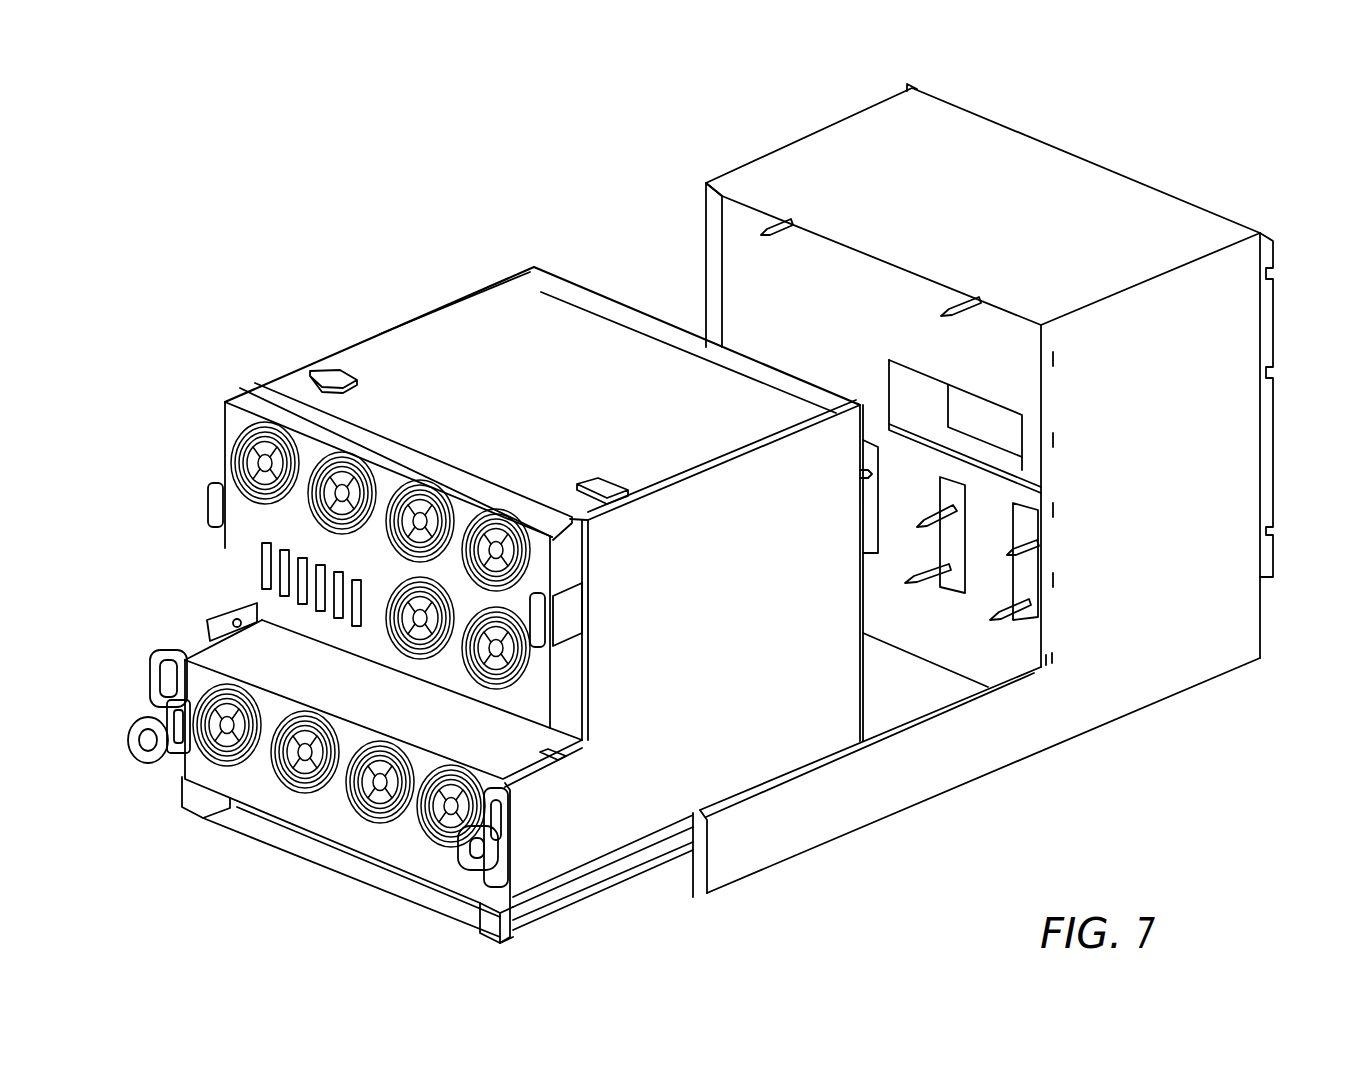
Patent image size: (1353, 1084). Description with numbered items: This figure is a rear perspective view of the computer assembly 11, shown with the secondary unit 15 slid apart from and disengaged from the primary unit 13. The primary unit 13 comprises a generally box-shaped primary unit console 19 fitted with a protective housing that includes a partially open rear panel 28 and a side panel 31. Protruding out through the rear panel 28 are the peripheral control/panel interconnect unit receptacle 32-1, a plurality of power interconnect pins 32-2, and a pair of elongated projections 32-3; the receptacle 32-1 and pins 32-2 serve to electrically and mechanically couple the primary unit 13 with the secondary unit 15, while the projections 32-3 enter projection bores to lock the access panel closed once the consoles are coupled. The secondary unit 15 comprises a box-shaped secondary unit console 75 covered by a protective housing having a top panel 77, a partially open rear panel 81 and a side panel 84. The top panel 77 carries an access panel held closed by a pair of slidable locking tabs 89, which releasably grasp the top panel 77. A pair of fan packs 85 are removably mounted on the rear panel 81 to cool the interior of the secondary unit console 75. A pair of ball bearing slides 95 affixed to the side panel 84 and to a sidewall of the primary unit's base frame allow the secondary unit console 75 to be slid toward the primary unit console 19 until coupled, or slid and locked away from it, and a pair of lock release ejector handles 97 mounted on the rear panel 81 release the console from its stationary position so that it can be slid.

The computer assembly 11 is at (1251, 771).
The primary unit 13 is at (1103, 675).
The secondary unit 15 is at (439, 258).
The primary unit console 19 is at (1105, 160).
The partially open rear panel 28 is at (743, 252).
The side panel 31 is at (1205, 655).
The peripheral control/panel interconnect unit receptacle 32-1 is at (1005, 428).
The power interconnect pins 32-2 is at (1020, 597).
The elongated projections 32-3 is at (948, 306).
The secondary unit console 75 is at (396, 323).
The top panel 77 is at (553, 290).
The partially open rear panel 81 is at (305, 592).
The side panel 84 is at (690, 762).
The fan packs 85 is at (228, 423).
The slidable locking tabs 89 is at (360, 378).
The ball bearing slides 95 is at (602, 902).
The lock release ejector handles 97 is at (128, 762).